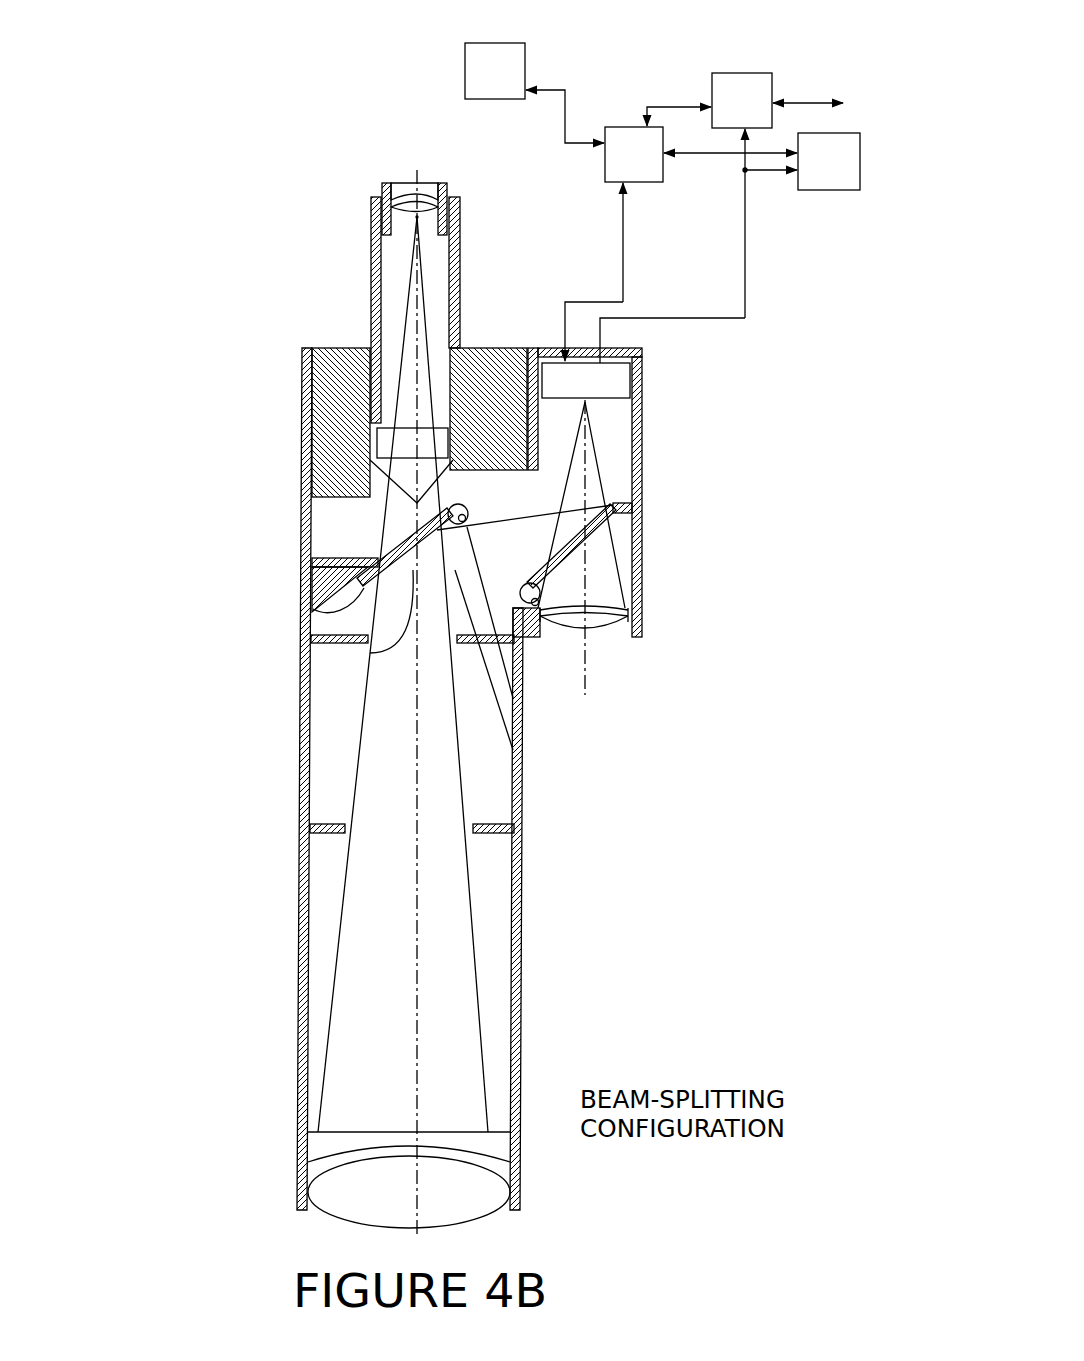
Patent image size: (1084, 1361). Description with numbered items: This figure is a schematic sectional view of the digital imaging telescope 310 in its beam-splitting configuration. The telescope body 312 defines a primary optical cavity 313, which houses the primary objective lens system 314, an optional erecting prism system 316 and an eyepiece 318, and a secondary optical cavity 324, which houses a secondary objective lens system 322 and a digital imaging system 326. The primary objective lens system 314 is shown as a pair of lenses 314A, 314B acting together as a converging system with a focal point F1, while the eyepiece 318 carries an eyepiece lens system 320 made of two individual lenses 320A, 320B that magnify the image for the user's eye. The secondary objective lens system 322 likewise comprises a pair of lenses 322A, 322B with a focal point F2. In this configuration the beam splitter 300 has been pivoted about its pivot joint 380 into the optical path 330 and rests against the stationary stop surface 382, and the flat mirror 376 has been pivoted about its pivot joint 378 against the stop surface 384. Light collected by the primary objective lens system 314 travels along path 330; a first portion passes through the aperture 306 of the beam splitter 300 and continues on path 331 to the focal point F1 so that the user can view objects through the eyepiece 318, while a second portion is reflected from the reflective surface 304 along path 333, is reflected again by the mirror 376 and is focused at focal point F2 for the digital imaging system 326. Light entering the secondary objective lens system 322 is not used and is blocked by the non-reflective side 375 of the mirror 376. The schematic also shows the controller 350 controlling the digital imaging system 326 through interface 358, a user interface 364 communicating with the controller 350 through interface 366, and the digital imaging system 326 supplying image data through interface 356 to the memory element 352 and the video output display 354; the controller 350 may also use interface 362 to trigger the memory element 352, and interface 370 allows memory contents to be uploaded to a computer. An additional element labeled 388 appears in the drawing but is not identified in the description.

The beam splitter 300 is at (382, 557).
The reflective surface 304 is at (312, 612).
The aperture 306 is at (370, 653).
The digital imaging telescope 310 is at (212, 797).
The telescope body 312 is at (303, 983).
The primary optical cavity 313 is at (497, 934).
The primary objective lens system 314 is at (258, 1152).
The lens 314A is at (323, 1140).
The lens 314B is at (335, 1193).
The erecting prism system 316 is at (387, 467).
The eyepiece 318 is at (340, 178).
The eyepiece lens system 320 is at (440, 160).
The lens 320A is at (430, 188).
The lens 320B is at (433, 206).
The secondary objective lens system 322 is at (637, 655).
The lens 322A is at (627, 610).
The lens 322B is at (605, 623).
The secondary optical cavity 324 is at (618, 448).
The digital imaging system 326 is at (585, 385).
The optical path 330 is at (360, 733).
The light path 331 is at (407, 377).
The light path 333 is at (525, 740).
The controller 350 is at (643, 133).
The memory element 352 is at (738, 87).
The video output display 354 is at (827, 180).
The interface 356 is at (745, 240).
The interface 358 is at (623, 240).
The interface 362 is at (675, 105).
The user interface 364 is at (478, 90).
The interface 366 is at (565, 90).
The interface 370 is at (800, 103).
The non-reflective side 375 is at (373, 580).
The flat mirror 376 is at (562, 523).
The pivot joint 378 is at (543, 612).
The pivot joint 380 is at (525, 680).
The stop surface 382 is at (312, 562).
The stop surface 384 is at (613, 508).
The support ledge 388 is at (525, 775).
The focal point F1 is at (417, 217).
The focal point F2 is at (587, 403).